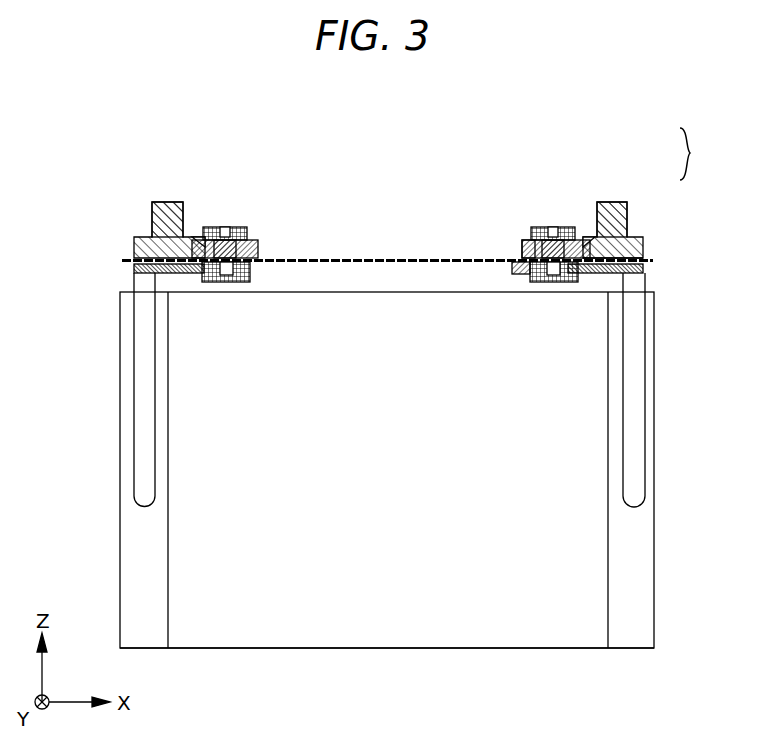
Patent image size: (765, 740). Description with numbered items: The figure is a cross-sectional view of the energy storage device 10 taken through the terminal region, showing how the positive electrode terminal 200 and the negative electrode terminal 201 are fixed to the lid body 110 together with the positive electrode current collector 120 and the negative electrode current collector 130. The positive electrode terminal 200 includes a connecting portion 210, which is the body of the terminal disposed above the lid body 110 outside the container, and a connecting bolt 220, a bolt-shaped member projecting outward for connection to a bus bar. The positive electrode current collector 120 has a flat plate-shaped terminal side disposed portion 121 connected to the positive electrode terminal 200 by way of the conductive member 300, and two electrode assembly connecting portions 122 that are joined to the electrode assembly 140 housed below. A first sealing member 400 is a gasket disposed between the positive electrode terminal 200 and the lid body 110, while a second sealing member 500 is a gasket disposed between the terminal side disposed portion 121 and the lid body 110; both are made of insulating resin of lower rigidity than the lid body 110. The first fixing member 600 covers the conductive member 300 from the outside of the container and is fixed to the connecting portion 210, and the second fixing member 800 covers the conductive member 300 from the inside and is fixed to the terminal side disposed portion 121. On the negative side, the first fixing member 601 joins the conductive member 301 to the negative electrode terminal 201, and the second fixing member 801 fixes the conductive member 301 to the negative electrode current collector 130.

The energy storage device 10 is at (428, 98).
The lid body 110 is at (393, 257).
The positive electrode current collector 120 is at (657, 482).
The terminal side disposed portion 121 is at (596, 265).
The electrode assembly connecting portions 122 is at (639, 433).
The negative electrode current collector 130 is at (131, 463).
The electrode assembly 140 is at (417, 640).
The positive electrode terminal 200 is at (648, 200).
The negative electrode terminal 201 is at (166, 199).
The connecting portion 210 is at (587, 245).
The connecting bolt 220 is at (615, 201).
The conductive member 300 is at (544, 240).
The conductive member 301 is at (230, 240).
The first sealing member 400 is at (523, 253).
The second sealing member 500 is at (518, 268).
The first fixing member 600 is at (565, 227).
The first fixing member 601 is at (215, 227).
The second fixing member 800 is at (540, 282).
The second fixing member 801 is at (232, 282).